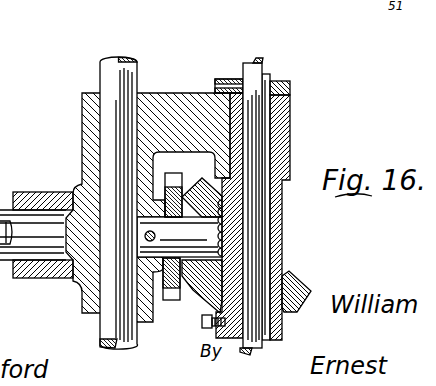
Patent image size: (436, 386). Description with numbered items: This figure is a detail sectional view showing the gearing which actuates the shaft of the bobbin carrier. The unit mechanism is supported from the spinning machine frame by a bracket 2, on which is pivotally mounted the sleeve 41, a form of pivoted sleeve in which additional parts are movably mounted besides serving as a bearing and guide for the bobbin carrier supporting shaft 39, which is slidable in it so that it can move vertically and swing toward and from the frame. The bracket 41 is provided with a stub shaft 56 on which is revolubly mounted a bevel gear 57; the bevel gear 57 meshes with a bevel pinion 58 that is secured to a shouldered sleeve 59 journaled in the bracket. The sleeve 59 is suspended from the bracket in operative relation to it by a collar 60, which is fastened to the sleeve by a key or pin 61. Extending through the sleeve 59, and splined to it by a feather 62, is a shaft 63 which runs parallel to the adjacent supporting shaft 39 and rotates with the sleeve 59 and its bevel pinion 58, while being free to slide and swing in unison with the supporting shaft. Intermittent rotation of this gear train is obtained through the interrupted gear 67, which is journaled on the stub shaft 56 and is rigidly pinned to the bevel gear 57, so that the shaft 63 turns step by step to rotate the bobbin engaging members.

The bracket 2 is at (42, 192).
The supporting shaft 39 is at (108, 64).
The sleeve 41 is at (82, 102).
The stub shaft 56 is at (179, 228).
The bevel gear 57 is at (197, 293).
The bevel pinion 58 is at (302, 288).
The shouldered sleeve 59 is at (282, 247).
The collar 60 is at (291, 84).
The key or pin 61 is at (222, 79).
The feather 62 is at (267, 76).
The shaft 63 is at (252, 61).
The interrupted gear 67 is at (168, 301).